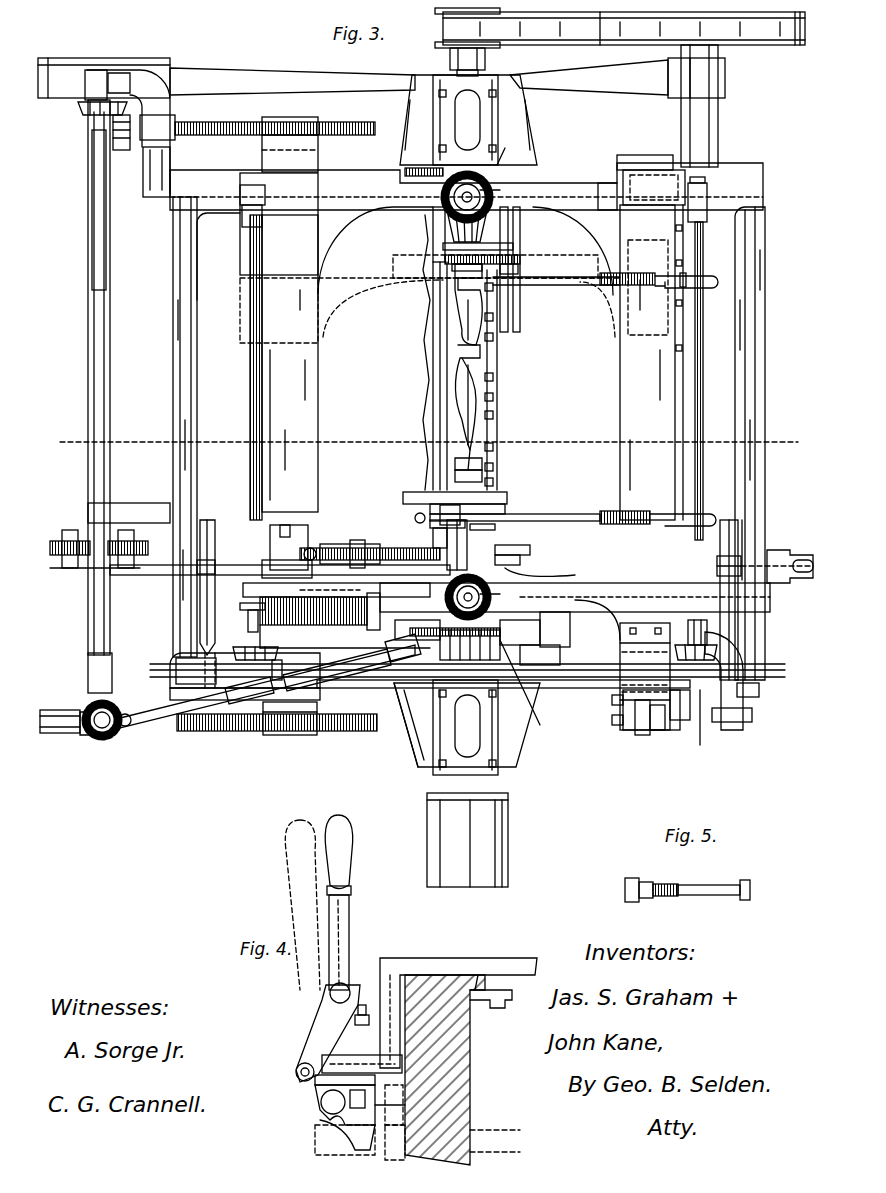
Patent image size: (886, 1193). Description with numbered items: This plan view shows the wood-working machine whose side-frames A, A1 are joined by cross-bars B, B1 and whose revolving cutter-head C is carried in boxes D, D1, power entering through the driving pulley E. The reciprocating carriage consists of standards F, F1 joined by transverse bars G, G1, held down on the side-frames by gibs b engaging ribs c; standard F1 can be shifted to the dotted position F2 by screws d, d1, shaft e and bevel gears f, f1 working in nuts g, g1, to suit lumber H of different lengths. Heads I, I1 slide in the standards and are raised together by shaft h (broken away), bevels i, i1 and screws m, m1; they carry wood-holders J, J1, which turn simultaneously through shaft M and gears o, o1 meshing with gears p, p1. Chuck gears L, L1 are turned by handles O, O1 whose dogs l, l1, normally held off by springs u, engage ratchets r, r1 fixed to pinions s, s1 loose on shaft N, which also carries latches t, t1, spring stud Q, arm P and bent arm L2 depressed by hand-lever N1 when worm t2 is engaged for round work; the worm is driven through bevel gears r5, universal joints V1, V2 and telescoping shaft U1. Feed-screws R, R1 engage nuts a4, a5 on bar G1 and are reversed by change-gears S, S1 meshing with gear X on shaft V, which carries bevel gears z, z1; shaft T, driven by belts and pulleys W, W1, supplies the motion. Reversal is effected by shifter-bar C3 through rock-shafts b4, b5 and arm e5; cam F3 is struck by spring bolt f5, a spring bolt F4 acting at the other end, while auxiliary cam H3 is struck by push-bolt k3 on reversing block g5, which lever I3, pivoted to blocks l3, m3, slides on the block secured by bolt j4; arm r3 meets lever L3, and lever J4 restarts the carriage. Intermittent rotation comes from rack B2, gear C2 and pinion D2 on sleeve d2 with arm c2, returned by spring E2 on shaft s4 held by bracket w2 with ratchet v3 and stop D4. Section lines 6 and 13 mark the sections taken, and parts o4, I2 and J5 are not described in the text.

In FIG. 3, the belt pulley W is at (553, 28).
In FIG. 3, the brace arm W1 is at (290, 72).
In FIG. 3, the bevel gear z1 is at (110, 130).
In FIG. 3, the feed screw R1 is at (233, 123).
In FIG. 3, the screw block a5 is at (300, 118).
In FIG. 3, the top cross rail A1 is at (596, 183).
In FIG. 3, the rack o1 is at (420, 168).
In FIG. 3, the upper spindle bracket D1 is at (490, 125).
In FIG. 3, the pin p1 is at (492, 170).
In FIG. 3, the upper gear i1 is at (475, 195).
In FIG. 3, the gear hub m1 is at (501, 200).
In FIG. 3, the lever I1 is at (415, 212).
In FIG. 3, the bevel pinion h is at (452, 238).
In FIG. 3, the bearing block F1 is at (520, 269).
In FIG. 3, the plate t1 is at (515, 248).
In FIG. 3, the rack bar J1 is at (445, 259).
In FIG. 3, the slide s1 is at (521, 263).
In FIG. 3, the link L1 is at (455, 268).
In FIG. 3, the rod l1 is at (530, 277).
In FIG. 3, the adjusting rod O1 is at (575, 282).
In FIG. 3, the nut u is at (657, 394).
In FIG. 3, the vertical shaft pipe V is at (88, 242).
In FIG. 3, the shaft T is at (108, 345).
In FIG. 3, the left frame upright B1 is at (192, 363).
In FIG. 3, the collar c is at (242, 205).
In FIG. 4, the collar c is at (478, 975).
In FIG. 3, the nut g1 is at (244, 224).
In FIG. 3, the left screw d1 is at (250, 375).
In FIG. 3, the left guide plate G1 is at (430, 359).
In FIG. 3, the guide curve F2 is at (469, 308).
In FIG. 3, the spindle column C is at (426, 345).
In FIG. 3, the mandrel M is at (440, 375).
In FIG. 3, the baluster work piece H is at (475, 360).
In FIG. 3, the rack strip N is at (502, 425).
In FIG. 3, the right guide plate G is at (608, 362).
In FIG. 4, the right guide plate G is at (440, 965).
In FIG. 3, the right screw d is at (707, 358).
In FIG. 3, the nut g is at (708, 218).
In FIG. 3, the right frame upright B is at (765, 386).
In FIG. 3, the section line 6 is at (427, 444).
In FIG. 3, the plate P is at (420, 492).
In FIG. 3, the block a4 is at (345, 609).
In FIG. 3, the lever L is at (485, 504).
In FIG. 3, the rod r is at (470, 528).
In FIG. 3, the adjusting rod Q is at (578, 514).
In FIG. 3, the link l is at (497, 527).
In FIG. 3, the pin 13 is at (430, 515).
In FIG. 3, the cross screw D2 is at (430, 548).
In FIG. 3, the collar c2 is at (432, 539).
In FIG. 3, the bearing d2 is at (452, 545).
In FIG. 3, the slide block C2 is at (350, 545).
In FIG. 3, the pin F4 is at (312, 550).
In FIG. 3, the bracket B2 is at (284, 525).
In FIG. 3, the slide D4 is at (272, 555).
In FIG. 3, the nut C3 is at (220, 565).
In FIG. 3, the rod o4 is at (200, 568).
In FIG. 3, the post b4 is at (214, 590).
In FIG. 3, the pin w2 is at (243, 603).
In FIG. 3, the stud s4 is at (239, 621).
In FIG. 3, the bevel gear f1 is at (250, 650).
In FIG. 3, the worm E2 is at (336, 615).
In FIG. 3, the slot v3 is at (340, 589).
In FIG. 3, the block I2 is at (416, 629).
In FIG. 3, the rack o is at (455, 620).
In FIG. 3, the lower gear i is at (455, 594).
In FIG. 3, the gear hub m is at (501, 593).
In FIG. 3, the bracket L2 is at (521, 625).
In FIG. 3, the bearing F is at (580, 623).
In FIG. 3, the block N1 is at (550, 644).
In FIG. 3, the slide J5 is at (513, 555).
In FIG. 3, the spring t is at (540, 565).
In FIG. 3, the gear S is at (62, 545).
In FIG. 3, the gear S1 is at (136, 549).
In FIG. 3, the shaft X is at (78, 570).
In FIG. 3, the bevel gear z is at (90, 705).
In FIG. 3, the collar r5 is at (95, 740).
In FIG. 3, the inclined shaft V1 is at (130, 730).
In FIG. 3, the bracket U1 is at (256, 676).
In FIG. 3, the lower feed screw R is at (277, 733).
In FIG. 3, the bracket arm V2 is at (396, 690).
In FIG. 3, the shaft e is at (587, 672).
In FIG. 3, the rack block t2 is at (470, 665).
In FIG. 3, the pin p is at (526, 692).
In FIG. 3, the frame bed A is at (535, 685).
In FIG. 4, the frame bed A is at (470, 1055).
In FIG. 3, the lower spindle bracket D is at (500, 780).
In FIG. 3, the base cylinder E is at (508, 850).
In FIG. 3, the post b5 is at (738, 552).
In FIG. 4, the post b5 is at (504, 1141).
In FIG. 3, the nut e5 is at (742, 562).
In FIG. 3, the bracket J4 is at (810, 558).
In FIG. 3, the elbow pipe f is at (735, 650).
In FIG. 3, the nut H3 is at (760, 692).
In FIG. 4, the nut H3 is at (400, 1105).
In FIG. 3, the bracket F3 is at (749, 719).
In FIG. 4, the bracket F3 is at (325, 1122).
In FIG. 3, the bolt k3 is at (610, 700).
In FIG. 4, the bolt k3 is at (404, 1113).
In FIG. 5, the bolt k3 is at (687, 898).
In FIG. 3, the bushing f5 is at (618, 725).
In FIG. 4, the bushing f5 is at (320, 1102).
In FIG. 3, the handle lever I3 is at (640, 738).
In FIG. 4, the handle lever I3 is at (331, 902).
In FIG. 3, the lever arm m3 is at (658, 732).
In FIG. 4, the lever arm m3 is at (328, 1025).
In FIG. 3, the plate l3 is at (670, 730).
In FIG. 4, the plate l3 is at (368, 1058).
In FIG. 3, the plate g5 is at (688, 722).
In FIG. 4, the plate g5 is at (320, 1080).
In FIG. 3, the block L3 is at (703, 726).
In FIG. 4, the block L3 is at (395, 1152).
In FIG. 4, the lug b is at (491, 1007).
In FIG. 4, the pin j4 is at (358, 1020).
In FIG. 4, the block r3 is at (355, 1150).